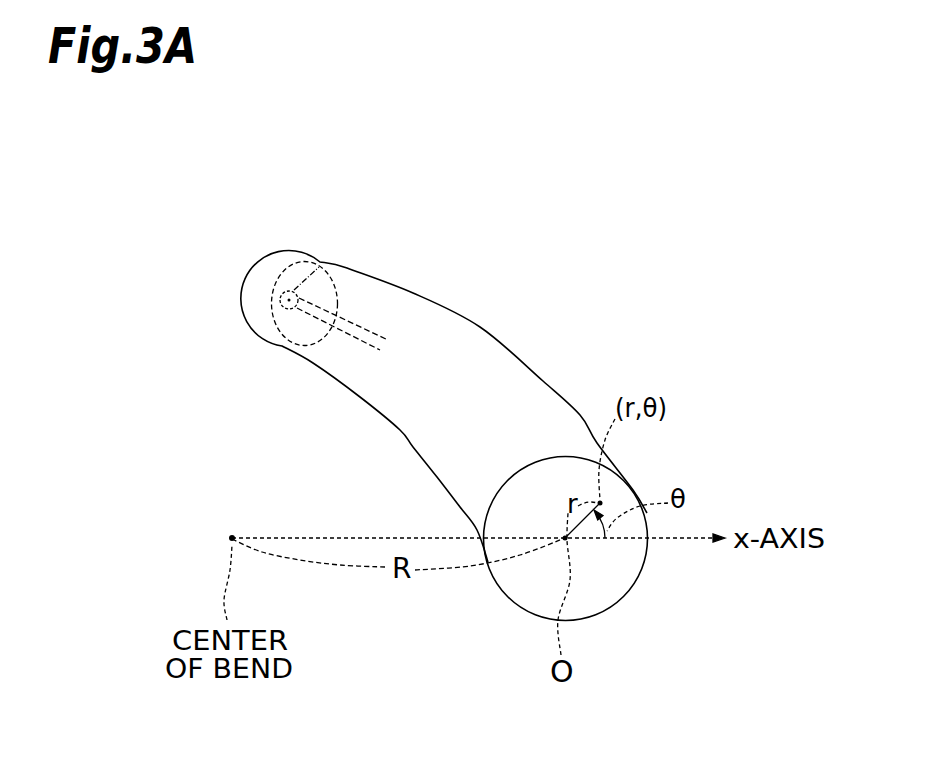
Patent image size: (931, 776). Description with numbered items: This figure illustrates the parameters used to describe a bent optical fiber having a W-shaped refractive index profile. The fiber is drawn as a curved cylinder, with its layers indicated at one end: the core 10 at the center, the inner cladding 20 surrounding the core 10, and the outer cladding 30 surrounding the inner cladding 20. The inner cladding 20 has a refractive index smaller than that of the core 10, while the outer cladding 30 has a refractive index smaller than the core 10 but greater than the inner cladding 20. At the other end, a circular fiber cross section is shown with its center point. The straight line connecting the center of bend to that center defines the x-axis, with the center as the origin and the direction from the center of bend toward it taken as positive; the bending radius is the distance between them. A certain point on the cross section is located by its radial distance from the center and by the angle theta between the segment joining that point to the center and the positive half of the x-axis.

The core 10 is at (280, 296).
The inner cladding 20 is at (333, 265).
The outer cladding 30 is at (289, 272).